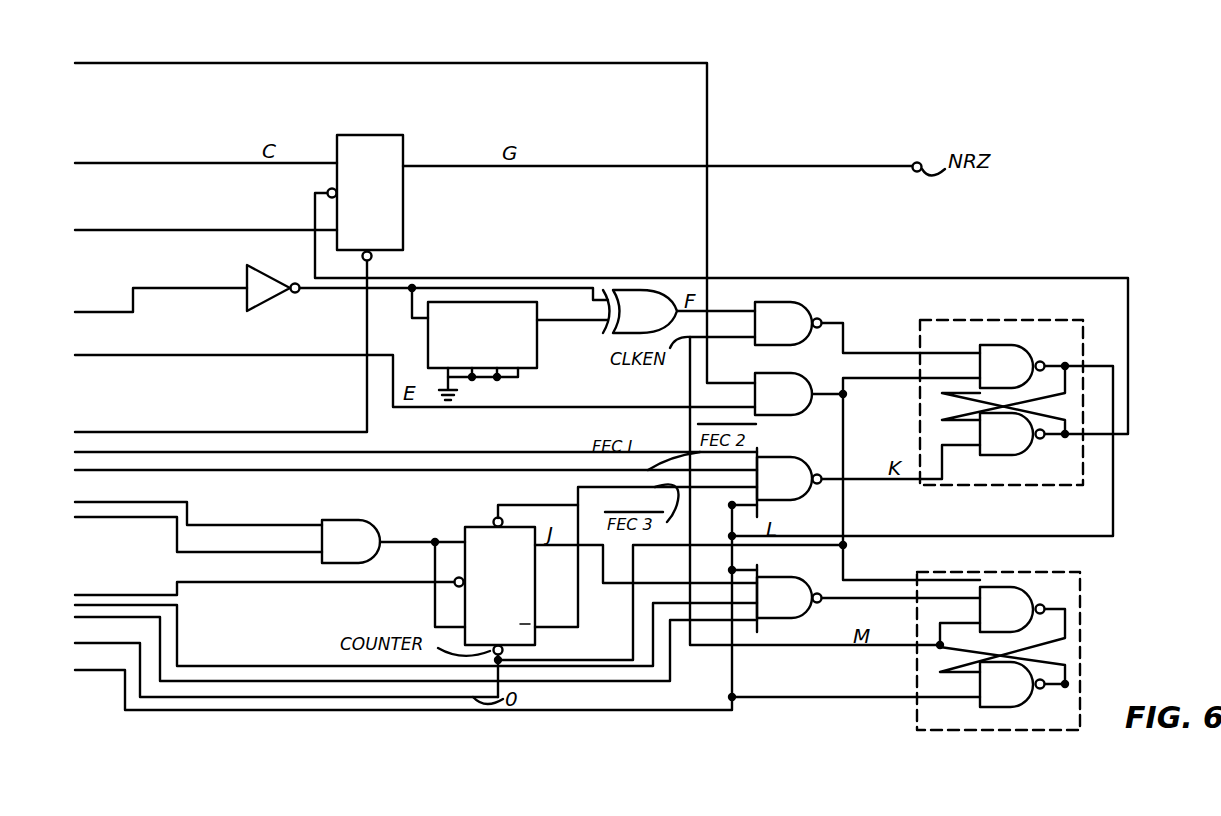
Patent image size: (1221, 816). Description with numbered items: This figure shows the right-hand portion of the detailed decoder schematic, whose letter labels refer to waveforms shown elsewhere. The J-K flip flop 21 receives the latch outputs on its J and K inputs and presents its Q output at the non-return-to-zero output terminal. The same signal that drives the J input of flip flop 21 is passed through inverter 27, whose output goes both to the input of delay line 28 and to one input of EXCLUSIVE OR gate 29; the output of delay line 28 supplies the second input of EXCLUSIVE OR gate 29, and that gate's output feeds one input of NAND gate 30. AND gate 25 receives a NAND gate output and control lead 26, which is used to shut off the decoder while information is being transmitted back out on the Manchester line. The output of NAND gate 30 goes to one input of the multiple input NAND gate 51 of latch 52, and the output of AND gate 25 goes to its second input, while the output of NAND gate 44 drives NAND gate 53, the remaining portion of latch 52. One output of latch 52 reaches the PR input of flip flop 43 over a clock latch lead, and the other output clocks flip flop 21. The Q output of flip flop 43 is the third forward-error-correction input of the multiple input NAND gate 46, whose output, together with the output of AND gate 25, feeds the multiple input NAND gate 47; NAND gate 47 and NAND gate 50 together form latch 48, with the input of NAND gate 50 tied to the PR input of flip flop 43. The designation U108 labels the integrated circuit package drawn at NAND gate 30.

The J-K flip flop 21 is at (393, 135).
The AND gate 25 is at (783, 416).
The control lead 26 is at (486, 62).
The inverter 27 is at (288, 272).
The delay line 28 is at (476, 302).
The EXCLUSIVE OR gate 29 is at (649, 290).
The NAND gate 30 is at (810, 302).
The flip flop 43 is at (485, 527).
The NAND gate 44 is at (806, 492).
The multiple input NAND gate 46 is at (818, 574).
The multiple input NAND gate 47 is at (1052, 575).
The latch 48 is at (350, 520).
The NAND gate 50 is at (993, 707).
The multiple input NAND gate 51 is at (1035, 346).
The latch 52 is at (972, 320).
The NAND gate 53 is at (1015, 456).
The integrated circuit U108 is at (770, 302).